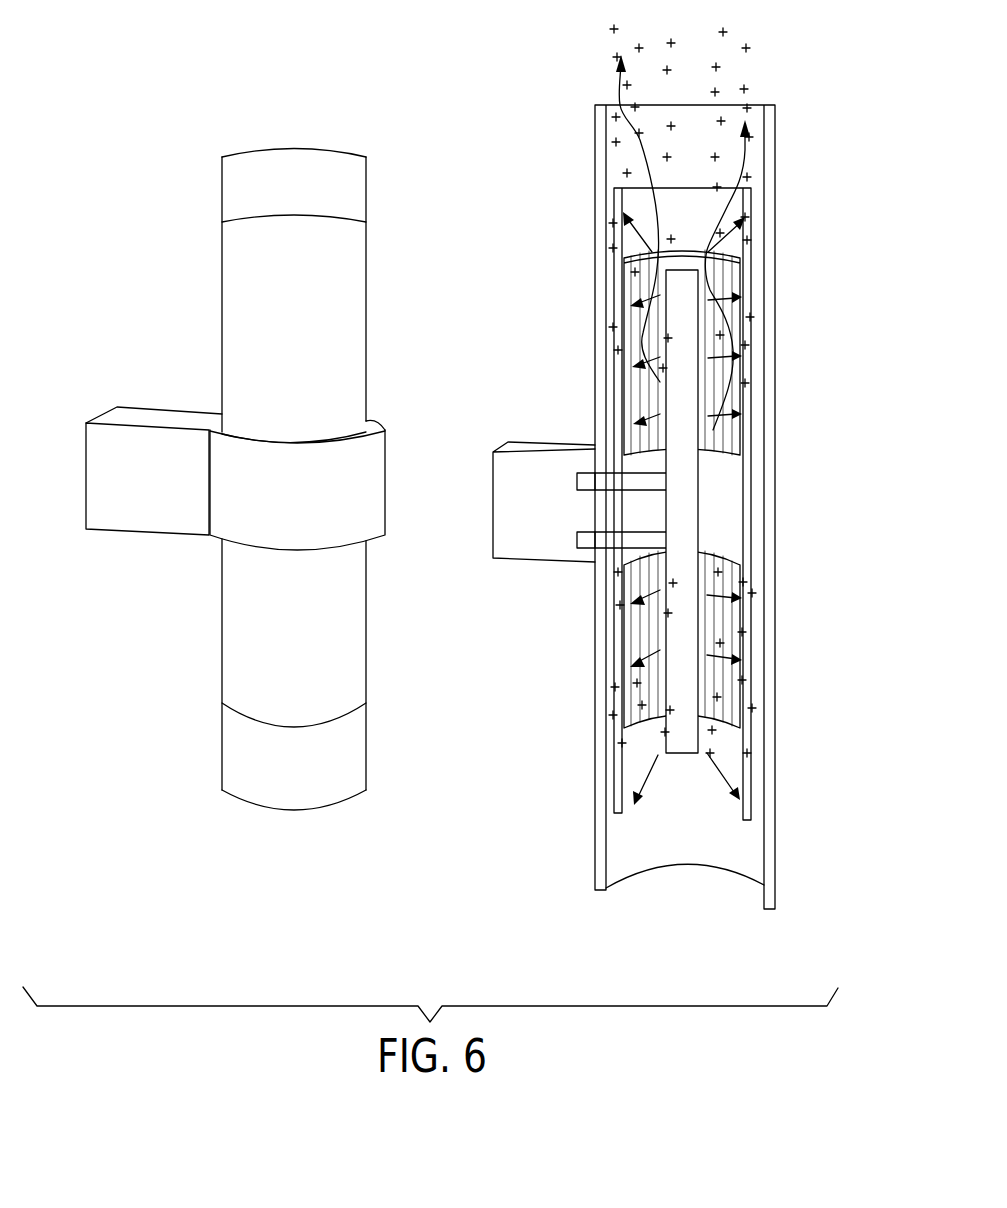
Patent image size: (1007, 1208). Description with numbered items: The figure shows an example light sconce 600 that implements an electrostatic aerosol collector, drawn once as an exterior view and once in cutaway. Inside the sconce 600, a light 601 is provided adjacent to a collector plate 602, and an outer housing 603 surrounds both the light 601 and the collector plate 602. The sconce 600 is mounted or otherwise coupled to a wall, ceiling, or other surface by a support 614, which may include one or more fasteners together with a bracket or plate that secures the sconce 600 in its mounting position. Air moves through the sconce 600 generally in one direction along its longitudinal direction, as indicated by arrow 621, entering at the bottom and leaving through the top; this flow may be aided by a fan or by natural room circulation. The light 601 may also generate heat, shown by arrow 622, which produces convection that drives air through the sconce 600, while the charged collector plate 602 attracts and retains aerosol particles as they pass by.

The light sconce 600 is at (479, 454).
The light 601 is at (688, 313).
The collector plate 602 is at (752, 449).
The outer housing 603 is at (777, 200).
The support 614 is at (530, 463).
The arrow 621 is at (620, 88).
The arrow 622 is at (630, 240).